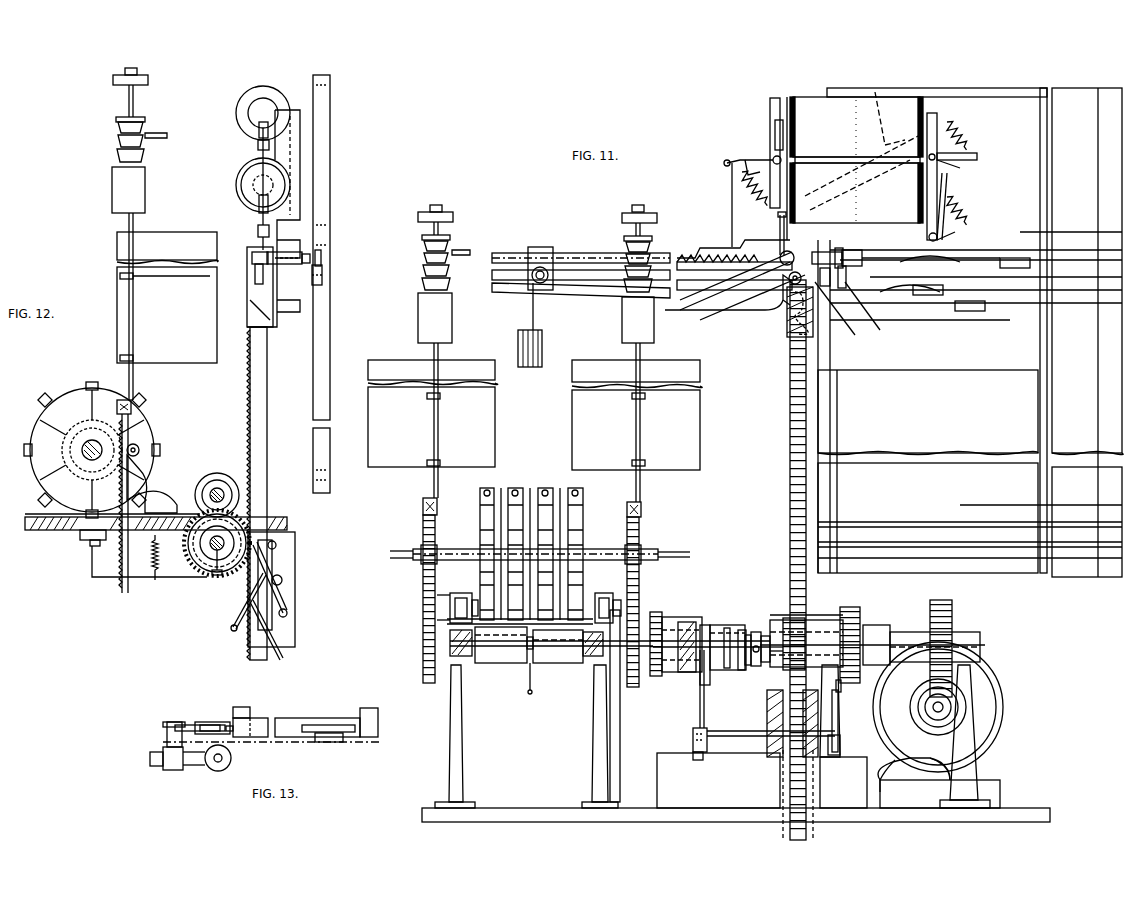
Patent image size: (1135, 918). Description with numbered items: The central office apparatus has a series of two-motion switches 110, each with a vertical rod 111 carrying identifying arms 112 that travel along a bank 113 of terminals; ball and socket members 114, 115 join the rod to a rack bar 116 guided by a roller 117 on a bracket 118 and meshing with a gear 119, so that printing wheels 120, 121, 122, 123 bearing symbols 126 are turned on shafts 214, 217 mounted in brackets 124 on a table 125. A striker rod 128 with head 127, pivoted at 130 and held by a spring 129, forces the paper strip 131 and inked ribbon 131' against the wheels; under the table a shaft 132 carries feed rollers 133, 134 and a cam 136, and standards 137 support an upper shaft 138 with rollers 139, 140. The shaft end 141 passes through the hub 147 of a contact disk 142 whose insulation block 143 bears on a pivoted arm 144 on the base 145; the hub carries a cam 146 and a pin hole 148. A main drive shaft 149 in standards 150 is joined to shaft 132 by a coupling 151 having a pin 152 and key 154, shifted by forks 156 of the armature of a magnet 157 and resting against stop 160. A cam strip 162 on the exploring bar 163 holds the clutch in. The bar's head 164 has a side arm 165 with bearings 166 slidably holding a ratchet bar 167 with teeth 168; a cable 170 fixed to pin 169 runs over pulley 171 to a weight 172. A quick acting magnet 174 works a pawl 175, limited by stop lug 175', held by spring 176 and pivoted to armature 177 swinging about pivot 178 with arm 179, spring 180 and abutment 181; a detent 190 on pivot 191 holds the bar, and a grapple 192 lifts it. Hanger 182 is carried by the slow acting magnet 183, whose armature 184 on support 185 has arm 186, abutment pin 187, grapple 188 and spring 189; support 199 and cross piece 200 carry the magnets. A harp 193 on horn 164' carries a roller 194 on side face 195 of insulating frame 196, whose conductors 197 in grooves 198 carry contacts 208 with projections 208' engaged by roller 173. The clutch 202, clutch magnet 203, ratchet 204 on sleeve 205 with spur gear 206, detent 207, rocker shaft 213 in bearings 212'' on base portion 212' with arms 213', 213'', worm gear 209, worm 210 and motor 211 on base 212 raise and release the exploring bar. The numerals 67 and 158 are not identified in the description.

In FIG. 12, the hub 67 is at (220, 485).
In FIG. 11, the hub 67 is at (621, 605).
In FIG. 12, the two-motion switches 110 is at (145, 204).
In FIG. 11, the two-motion switches 110 is at (418, 326).
In FIG. 12, the rod 111 is at (124, 247).
In FIG. 11, the rod 111 is at (430, 479).
In FIG. 12, the identifying arms 112 is at (134, 280).
In FIG. 11, the identifying arms 112 is at (440, 399).
In FIG. 12, the bank of terminals 113 is at (217, 306).
In FIG. 11, the bank of terminals 113 is at (496, 396).
In FIG. 12, the ball and socket member 114 is at (134, 410).
In FIG. 12, the ball and socket member 115 is at (133, 405).
In FIG. 11, the ball and socket member 115 is at (423, 503).
In FIG. 12, the rack bar 116 is at (135, 428).
In FIG. 11, the rack bar 116 is at (423, 605).
In FIG. 12, the roller 117 is at (165, 440).
In FIG. 12, the bracket 118 is at (140, 455).
In FIG. 12, the gear 119 is at (38, 478).
In FIG. 11, the gear 119 is at (423, 550).
In FIG. 11, the printing wheel 120 is at (482, 488).
In FIG. 11, the printing wheel 121 is at (515, 488).
In FIG. 11, the printing wheel 122 is at (545, 488).
In FIG. 12, the printing wheel 123 is at (55, 420).
In FIG. 11, the printing wheel 123 is at (575, 488).
In FIG. 12, the brackets 124 is at (162, 478).
In FIG. 11, the brackets 124 is at (501, 488).
In FIG. 12, the table 125 is at (33, 530).
In FIG. 11, the table 125 is at (480, 525).
In FIG. 12, the symbols 126 is at (92, 388).
In FIG. 12, the head 127 is at (90, 543).
In FIG. 11, the head 127 is at (495, 646).
In FIG. 12, the metal rod 128 is at (97, 577).
In FIG. 12, the spring 129 is at (153, 572).
In FIG. 11, the spring 129 is at (531, 690).
In FIG. 12, the pivot 130 is at (283, 580).
In FIG. 12, the strip of paper 131 is at (106, 503).
In FIG. 11, the strip of paper 131 is at (421, 615).
In FIG. 12, the inked ribbon 131' is at (68, 552).
In FIG. 11, the shaft 132 is at (450, 645).
In FIG. 11, the roller 133 is at (508, 663).
In FIG. 11, the roller 134 is at (570, 663).
In FIG. 12, the cam 136 is at (210, 575).
In FIG. 11, the cam 136 is at (530, 649).
In FIG. 11, the standards 137 is at (463, 748).
In FIG. 11, the upper shaft 138 is at (450, 600).
In FIG. 11, the roller 139 is at (470, 580).
In FIG. 12, the roller 140 is at (236, 490).
In FIG. 11, the roller 140 is at (595, 600).
In FIG. 11, the projecting end of shaft 141 is at (603, 645).
In FIG. 11, the electrical contact metallic disk 142 is at (659, 676).
In FIG. 11, the block of insulation 143 is at (685, 672).
In FIG. 11, the arm 144 is at (680, 617).
In FIG. 11, the base 145 is at (620, 730).
In FIG. 11, the cam 146 is at (705, 685).
In FIG. 11, the hub 147 is at (748, 665).
In FIG. 11, the pin hole 148 is at (722, 625).
In FIG. 11, the main drive shaft 149 is at (775, 640).
In FIG. 11, the standards 150 is at (840, 778).
In FIG. 11, the coupling 151 is at (756, 666).
In FIG. 11, the pin 152 is at (727, 628).
In FIG. 11, the key 154 is at (765, 662).
In FIG. 11, the forks 156 is at (742, 630).
In FIG. 11, the magnet 157 is at (704, 705).
In FIG. 11, the base plate 158 is at (736, 802).
In FIG. 11, the abutment or stop 160 is at (752, 635).
In FIG. 11, the cam strip 162 is at (786, 365).
In FIG. 12, the rack bar 163 is at (276, 385).
In FIG. 11, the rack bar 163 is at (788, 470).
In FIG. 12, the head 164 is at (247, 292).
In FIG. 11, the head 164 is at (781, 312).
In FIG. 13, the horn 164' is at (163, 734).
In FIG. 11, the side arm 165 is at (590, 290).
In FIG. 11, the bearings 166 is at (528, 280).
In FIG. 12, the ratchet bar 167 is at (252, 254).
In FIG. 13, the ratchet bar 167 is at (180, 770).
In FIG. 11, the ratchet bar 167 is at (598, 252).
In FIG. 11, the teeth 168 is at (680, 245).
In FIG. 11, the pin 169 is at (700, 310).
In FIG. 11, the cable 170 is at (533, 310).
In FIG. 11, the pulley 171 is at (545, 283).
In FIG. 11, the weight 172 is at (542, 348).
In FIG. 12, the roller 173 is at (296, 252).
In FIG. 13, the roller 173 is at (231, 757).
In FIG. 11, the roller 173 is at (880, 252).
In FIG. 11, the quick acting electro-magnet 174 is at (856, 190).
In FIG. 12, the pawl 175 is at (245, 232).
In FIG. 11, the pawl 175 is at (733, 230).
In FIG. 11, the stop lug 175' is at (858, 172).
In FIG. 12, the spring 176 is at (259, 203).
In FIG. 11, the spring 176 is at (968, 207).
In FIG. 12, the armature 177 is at (246, 180).
In FIG. 11, the armature 177 is at (947, 190).
In FIG. 11, the pivot 178 is at (960, 168).
In FIG. 11, the arm 179 is at (977, 152).
In FIG. 12, the spring 180 is at (258, 130).
In FIG. 11, the spring 180 is at (968, 133).
In FIG. 11, the abutment 181 is at (950, 235).
In FIG. 12, the hanger or bracket 182 is at (252, 106).
In FIG. 11, the hanger or bracket 182 is at (940, 128).
In FIG. 11, the slow acting electro-magnet 183 is at (856, 127).
In FIG. 11, the armature 184 is at (770, 110).
In FIG. 11, the support 185 is at (776, 225).
In FIG. 11, the arm 186 is at (724, 165).
In FIG. 11, the abutment pin 187 is at (757, 160).
In FIG. 11, the grapple 188 is at (732, 222).
In FIG. 11, the spring 189 is at (740, 191).
In FIG. 11, the detent 190 is at (782, 248).
In FIG. 11, the pivot 191 is at (692, 300).
In FIG. 11, the grapple 192 is at (712, 318).
In FIG. 12, the arm or harp 193 is at (325, 290).
In FIG. 13, the arm or harp 193 is at (187, 722).
In FIG. 11, the arm or harp 193 is at (843, 309).
In FIG. 12, the metallic roller 194 is at (325, 252).
In FIG. 13, the metallic roller 194 is at (226, 722).
In FIG. 11, the metallic roller 194 is at (868, 305).
In FIG. 12, the side face 195 is at (330, 142).
In FIG. 13, the side face 195 is at (236, 707).
In FIG. 11, the side face 195 is at (818, 383).
In FIG. 13, the insulating frame 196 is at (250, 708).
In FIG. 11, the insulating frame 196 is at (837, 488).
In FIG. 13, the conductors 197 is at (295, 717).
In FIG. 11, the conductors 197 is at (1040, 268).
In FIG. 11, the grooves 198 is at (1098, 280).
In FIG. 11, the support 199 is at (849, 253).
In FIG. 11, the cross piece 200 is at (880, 108).
In FIG. 11, the clutch 202 is at (888, 625).
In FIG. 11, the clutch magnet 203 is at (825, 620).
In FIG. 12, the ratchet 204 is at (248, 525).
In FIG. 11, the ratchet 204 is at (852, 607).
In FIG. 11, the sleeve 205 is at (815, 620).
In FIG. 12, the spur gear 206 is at (200, 560).
In FIG. 11, the spur gear 206 is at (783, 625).
In FIG. 12, the detent 207 is at (275, 565).
In FIG. 11, the detent 207 is at (840, 748).
In FIG. 13, the contact 208 is at (328, 703).
In FIG. 11, the contact 208 is at (971, 266).
In FIG. 13, the projection 208' is at (331, 753).
In FIG. 11, the worm gear 209 is at (952, 603).
In FIG. 11, the worm 210 is at (945, 705).
In FIG. 11, the motor 211 is at (1003, 710).
In FIG. 11, the base 212 is at (914, 782).
In FIG. 11, the portion of base 212' is at (718, 780).
In FIG. 11, the bearings 212'' is at (687, 762).
In FIG. 11, the rocker shaft 213 is at (771, 734).
In FIG. 12, the arm 213' is at (235, 602).
In FIG. 11, the arm 213' is at (681, 734).
In FIG. 12, the arm 213'' is at (280, 637).
In FIG. 11, the arm 213'' is at (842, 699).
In FIG. 11, the shaft 214 is at (389, 562).
In FIG. 11, the shaft 217 is at (660, 555).